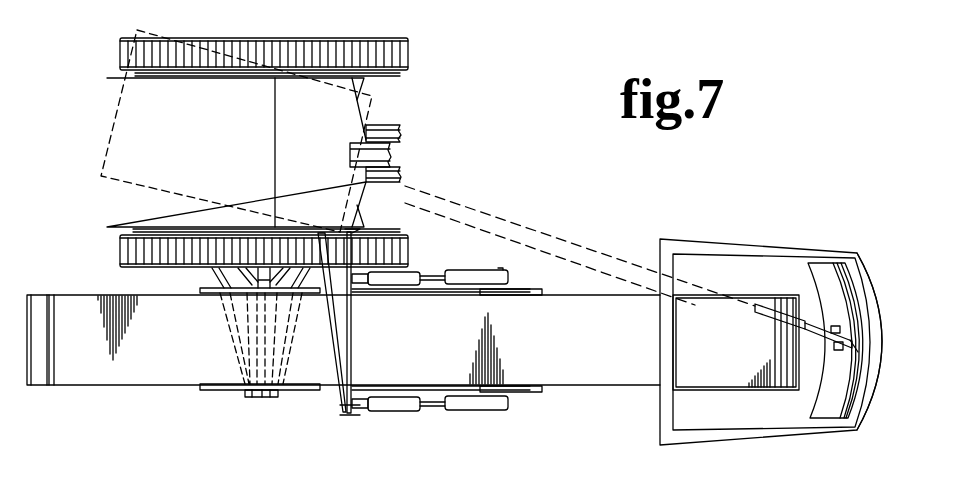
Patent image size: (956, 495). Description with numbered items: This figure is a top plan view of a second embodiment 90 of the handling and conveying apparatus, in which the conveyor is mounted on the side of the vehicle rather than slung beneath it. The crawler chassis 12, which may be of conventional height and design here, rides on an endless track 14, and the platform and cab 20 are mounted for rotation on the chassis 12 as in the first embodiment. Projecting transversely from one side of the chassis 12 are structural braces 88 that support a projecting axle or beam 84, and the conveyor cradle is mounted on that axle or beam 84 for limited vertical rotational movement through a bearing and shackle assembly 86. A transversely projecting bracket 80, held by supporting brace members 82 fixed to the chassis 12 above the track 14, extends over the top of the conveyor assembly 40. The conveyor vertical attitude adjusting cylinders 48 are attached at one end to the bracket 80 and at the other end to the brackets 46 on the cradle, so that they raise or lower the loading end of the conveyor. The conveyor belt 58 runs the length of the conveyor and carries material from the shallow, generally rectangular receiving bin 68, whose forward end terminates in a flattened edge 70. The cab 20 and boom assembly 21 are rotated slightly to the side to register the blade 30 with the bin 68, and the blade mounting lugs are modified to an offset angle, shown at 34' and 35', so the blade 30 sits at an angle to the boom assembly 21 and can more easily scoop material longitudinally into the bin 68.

The chassis 12 is at (152, 228).
The endless track 14 is at (408, 60).
The platform and cab 20 is at (107, 88).
The boom assembly 21 is at (550, 238).
The blade 30 is at (820, 265).
The mounting lug 34' is at (803, 361).
The mounting lug 35' is at (868, 403).
The conveyor assembly 40 is at (600, 295).
The bracket member 46 is at (532, 290).
The conveyor tilting hydraulic cylinder 48 is at (420, 272).
The conveyor belt 58 is at (548, 337).
The material-receiving bin 68 is at (733, 240).
The flattened edge 70 is at (873, 285).
The bracket 80 is at (351, 318).
The supporting brace member 82 is at (332, 340).
The axle or beam 84 is at (240, 388).
The bearing and shackle assembly 86 is at (265, 397).
The structural brace 88 is at (265, 265).
The second embodiment of the apparatus 90 is at (413, 185).